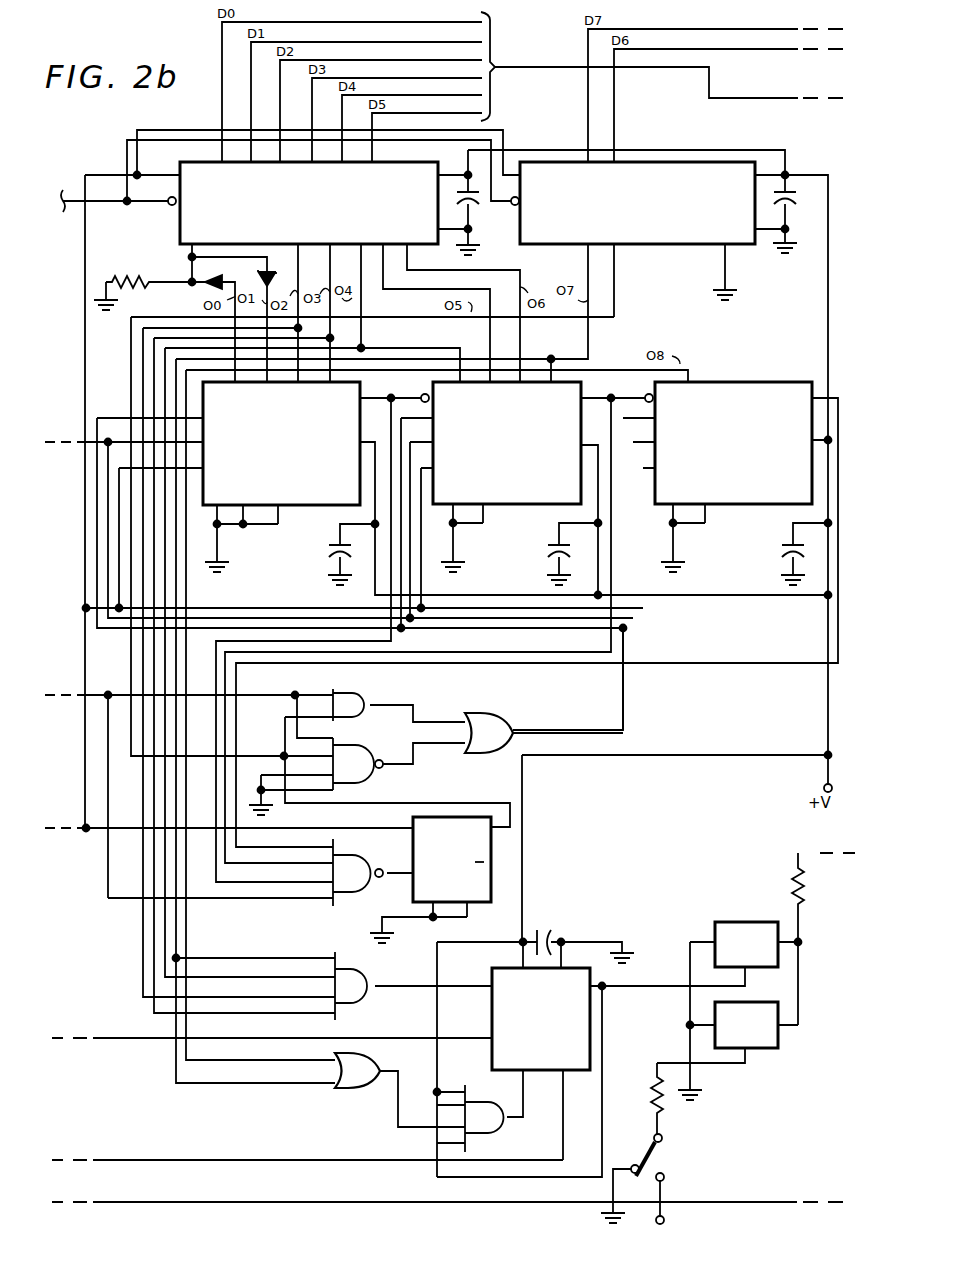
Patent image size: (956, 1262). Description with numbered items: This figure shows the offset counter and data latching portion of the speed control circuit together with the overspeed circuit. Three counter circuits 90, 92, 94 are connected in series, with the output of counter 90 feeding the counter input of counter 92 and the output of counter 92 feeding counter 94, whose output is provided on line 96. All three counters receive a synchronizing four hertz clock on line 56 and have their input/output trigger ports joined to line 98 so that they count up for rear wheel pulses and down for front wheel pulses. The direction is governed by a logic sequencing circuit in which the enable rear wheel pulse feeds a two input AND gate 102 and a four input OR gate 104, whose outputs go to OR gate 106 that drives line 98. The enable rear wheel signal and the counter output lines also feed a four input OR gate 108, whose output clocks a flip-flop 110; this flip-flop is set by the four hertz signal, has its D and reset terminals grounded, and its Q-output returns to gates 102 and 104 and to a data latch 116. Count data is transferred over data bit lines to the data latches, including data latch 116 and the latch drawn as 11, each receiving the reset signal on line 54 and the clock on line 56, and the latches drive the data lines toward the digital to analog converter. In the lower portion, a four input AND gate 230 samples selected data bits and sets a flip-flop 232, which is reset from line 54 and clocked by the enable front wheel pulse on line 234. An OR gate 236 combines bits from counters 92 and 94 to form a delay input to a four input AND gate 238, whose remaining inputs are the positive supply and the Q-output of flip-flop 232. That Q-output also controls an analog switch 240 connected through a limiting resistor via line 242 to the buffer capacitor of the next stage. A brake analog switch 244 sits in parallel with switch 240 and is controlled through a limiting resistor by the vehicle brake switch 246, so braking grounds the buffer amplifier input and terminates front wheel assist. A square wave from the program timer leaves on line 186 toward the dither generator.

The data latches 11 is at (320, 194).
The data latch 116 is at (664, 194).
The reset signal line 54 is at (72, 181).
The clock signal line 56 is at (72, 820).
The counter circuit 90 is at (300, 452).
The counter circuit 92 is at (532, 452).
The counter circuit 94 is at (756, 452).
The counter output line 96 is at (817, 380).
The input/output trigger line 98 is at (625, 702).
The two input AND gate 102 is at (353, 700).
The four input OR gate 104 is at (350, 760).
The OR gate 106 is at (544, 719).
The four input OR gate 108 is at (374, 850).
The flip-flop 110 is at (484, 888).
The four input AND gate 230 is at (355, 978).
The flip-flop 232 is at (563, 1026).
The enable front wheel pulse line 234 is at (212, 1160).
The OR gate 236 is at (355, 1064).
The four input AND gate 238 is at (490, 1128).
The analog switch 240 is at (746, 931).
The line 242 is at (796, 858).
The brake analog switch 244 is at (762, 1040).
The vehicle brake switch 246 is at (664, 1142).
The square wave signal line 186 is at (214, 1202).